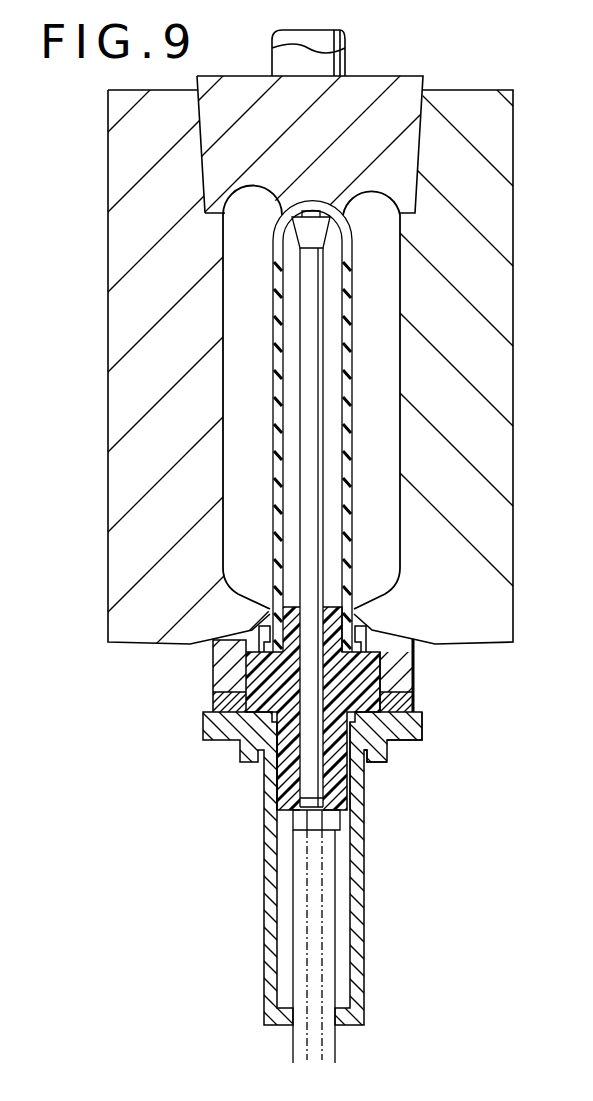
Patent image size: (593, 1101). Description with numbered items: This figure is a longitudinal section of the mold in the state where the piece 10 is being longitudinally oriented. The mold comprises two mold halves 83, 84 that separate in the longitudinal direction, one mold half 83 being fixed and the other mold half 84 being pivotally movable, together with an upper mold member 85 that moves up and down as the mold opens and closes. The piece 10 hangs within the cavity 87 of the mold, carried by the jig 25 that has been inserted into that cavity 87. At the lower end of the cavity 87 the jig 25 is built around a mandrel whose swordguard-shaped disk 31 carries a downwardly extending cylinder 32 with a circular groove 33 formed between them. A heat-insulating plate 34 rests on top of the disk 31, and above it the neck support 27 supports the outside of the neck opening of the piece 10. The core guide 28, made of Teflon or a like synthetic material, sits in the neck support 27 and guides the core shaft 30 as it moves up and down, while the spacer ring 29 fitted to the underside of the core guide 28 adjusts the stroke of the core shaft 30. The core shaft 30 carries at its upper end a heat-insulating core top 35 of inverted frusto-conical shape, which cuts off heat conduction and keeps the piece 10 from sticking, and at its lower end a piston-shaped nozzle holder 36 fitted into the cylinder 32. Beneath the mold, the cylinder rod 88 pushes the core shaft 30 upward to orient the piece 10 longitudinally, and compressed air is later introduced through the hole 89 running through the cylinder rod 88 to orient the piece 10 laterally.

The piece 10 is at (353, 427).
The jig 25 is at (201, 757).
The neck support 27 is at (222, 673).
The core guide 28 is at (368, 667).
The spacer ring 29 is at (293, 751).
The core shaft 30 is at (318, 320).
The disk 31 is at (423, 734).
The cylinder 32 is at (366, 838).
The circular groove 33 is at (371, 765).
The heat-insulating plate 34 is at (414, 704).
The core top 35 is at (320, 230).
The nozzle holder 36 is at (338, 797).
The mold half 83 is at (150, 403).
The mold half 84 is at (463, 567).
The upper mold member 85 is at (319, 157).
The cavity 87 is at (266, 437).
The cylinder rod 88 is at (328, 1040).
The compressed air introducing hole 89 is at (312, 1055).